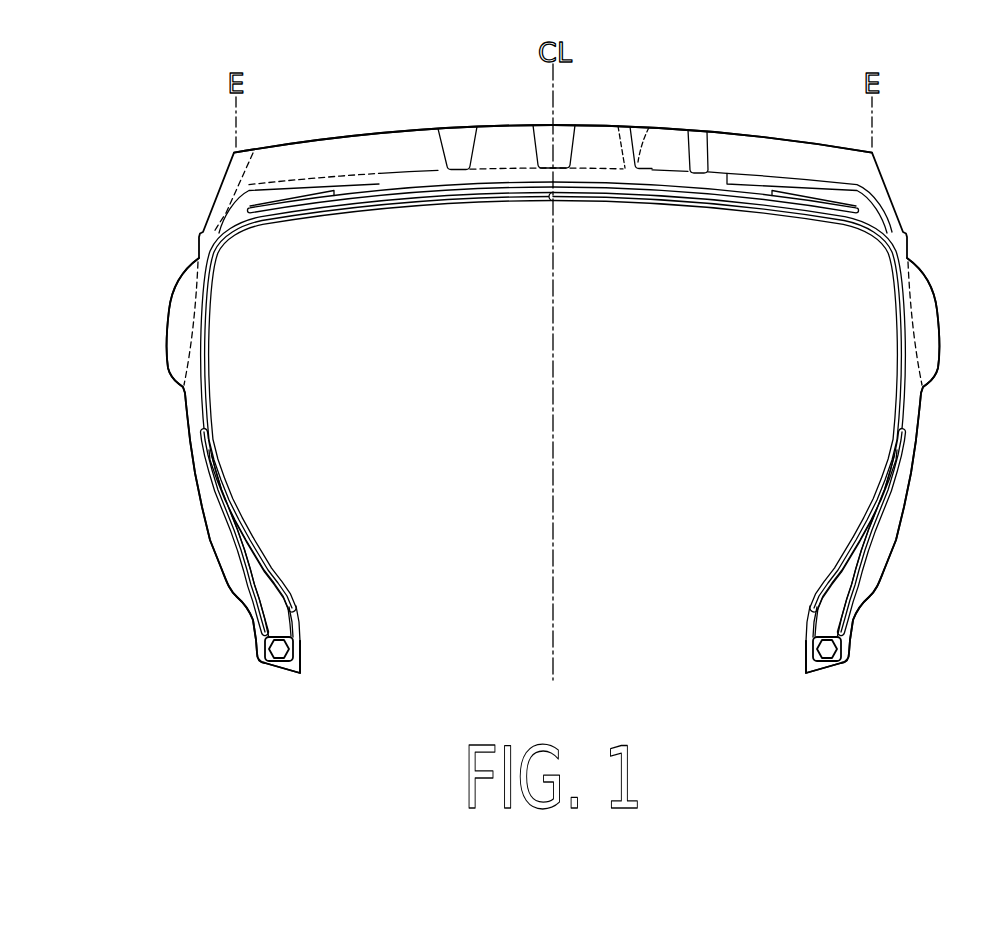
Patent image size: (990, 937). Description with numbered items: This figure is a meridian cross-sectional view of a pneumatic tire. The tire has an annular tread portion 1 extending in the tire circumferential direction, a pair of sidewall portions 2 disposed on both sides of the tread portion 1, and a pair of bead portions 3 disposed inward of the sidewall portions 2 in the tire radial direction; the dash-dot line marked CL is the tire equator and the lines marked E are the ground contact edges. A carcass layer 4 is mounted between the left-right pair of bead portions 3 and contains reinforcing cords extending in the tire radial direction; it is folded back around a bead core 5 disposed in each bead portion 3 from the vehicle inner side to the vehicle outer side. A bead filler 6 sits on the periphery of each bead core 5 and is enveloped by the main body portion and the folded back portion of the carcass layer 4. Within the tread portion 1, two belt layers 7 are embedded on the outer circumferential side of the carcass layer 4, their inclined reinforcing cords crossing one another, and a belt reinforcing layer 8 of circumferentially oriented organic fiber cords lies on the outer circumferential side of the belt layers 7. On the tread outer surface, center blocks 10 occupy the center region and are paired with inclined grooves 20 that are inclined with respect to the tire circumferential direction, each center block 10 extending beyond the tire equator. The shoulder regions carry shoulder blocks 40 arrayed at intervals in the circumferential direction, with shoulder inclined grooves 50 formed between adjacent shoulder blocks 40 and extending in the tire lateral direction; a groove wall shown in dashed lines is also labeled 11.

The tread portion 1 is at (640, 102).
The sidewall portion 2 is at (170, 410).
The bead portion 3 is at (242, 650).
The carcass layer 4 is at (851, 241).
The bead core 5 is at (279, 648).
The bead filler 6 is at (262, 582).
The belt layer 7 is at (661, 189).
The belt reinforcing layer 8 is at (770, 192).
The center block 10 is at (515, 127).
The groove wall 11 is at (472, 147).
The inclined groove 20 is at (566, 127).
The shoulder block 40 is at (343, 138).
The shoulder inclined groove 50 is at (398, 172).